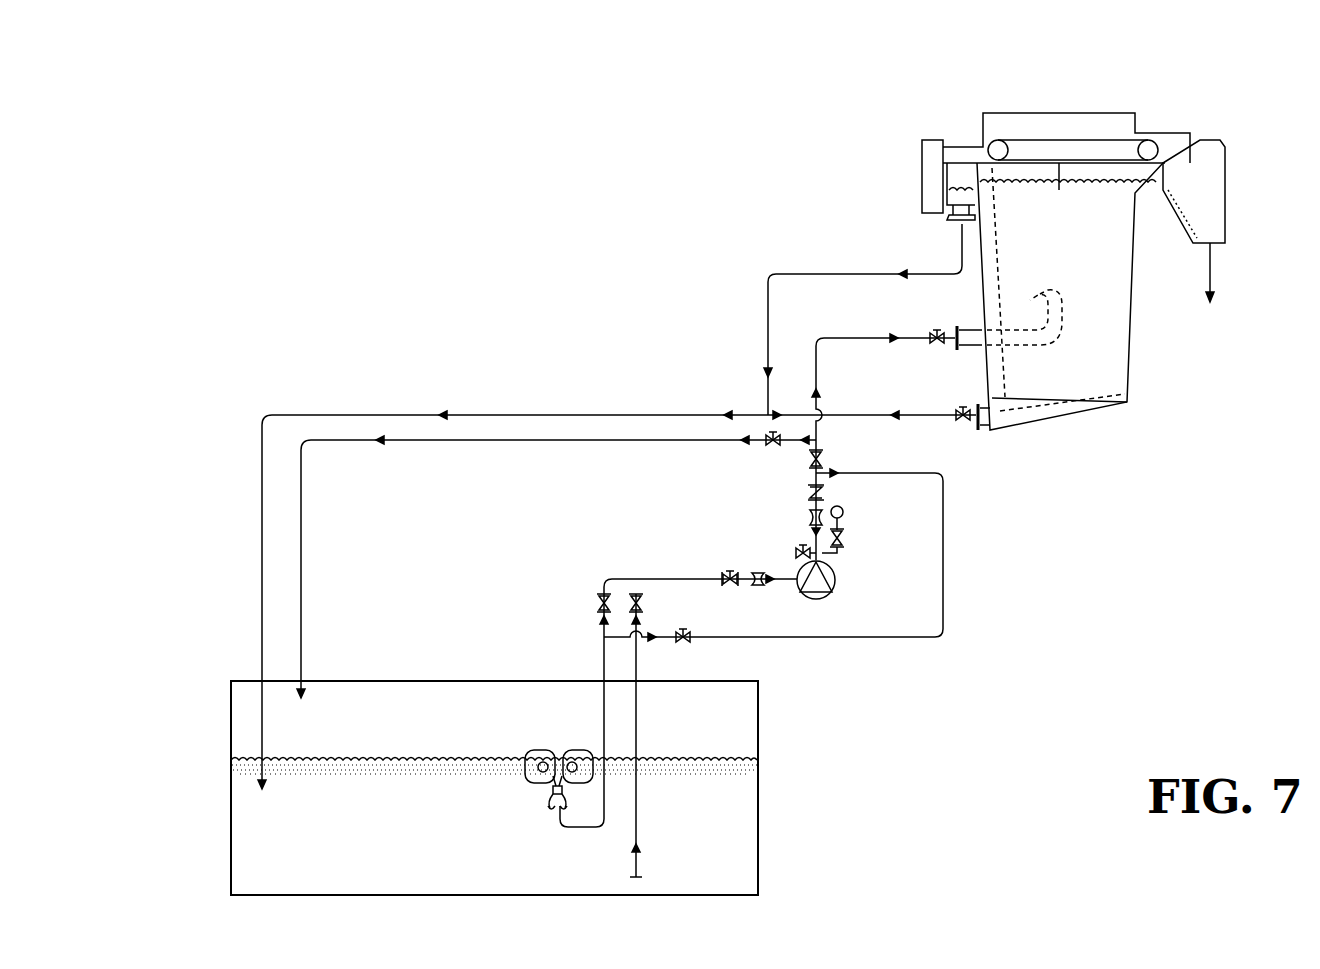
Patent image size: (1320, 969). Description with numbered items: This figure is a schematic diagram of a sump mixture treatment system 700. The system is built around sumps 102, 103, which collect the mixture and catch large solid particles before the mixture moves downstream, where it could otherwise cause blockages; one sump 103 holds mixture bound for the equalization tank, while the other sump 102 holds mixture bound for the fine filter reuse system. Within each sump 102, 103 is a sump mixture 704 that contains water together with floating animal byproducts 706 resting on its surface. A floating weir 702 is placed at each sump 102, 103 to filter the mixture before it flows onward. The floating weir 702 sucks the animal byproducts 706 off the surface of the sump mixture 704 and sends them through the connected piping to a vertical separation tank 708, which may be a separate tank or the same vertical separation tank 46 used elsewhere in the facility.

The sump mixture treatment system 700 is at (210, 372).
The vertical separation tank 708 is at (1106, 229).
The vertical separation tank 46 is at (1172, 109).
The floating weir 702 is at (518, 778).
The sump mixture 704 is at (429, 826).
The floating animal byproducts 706 is at (312, 773).
The sump 102 is at (567, 788).
The sump 103 is at (760, 853).